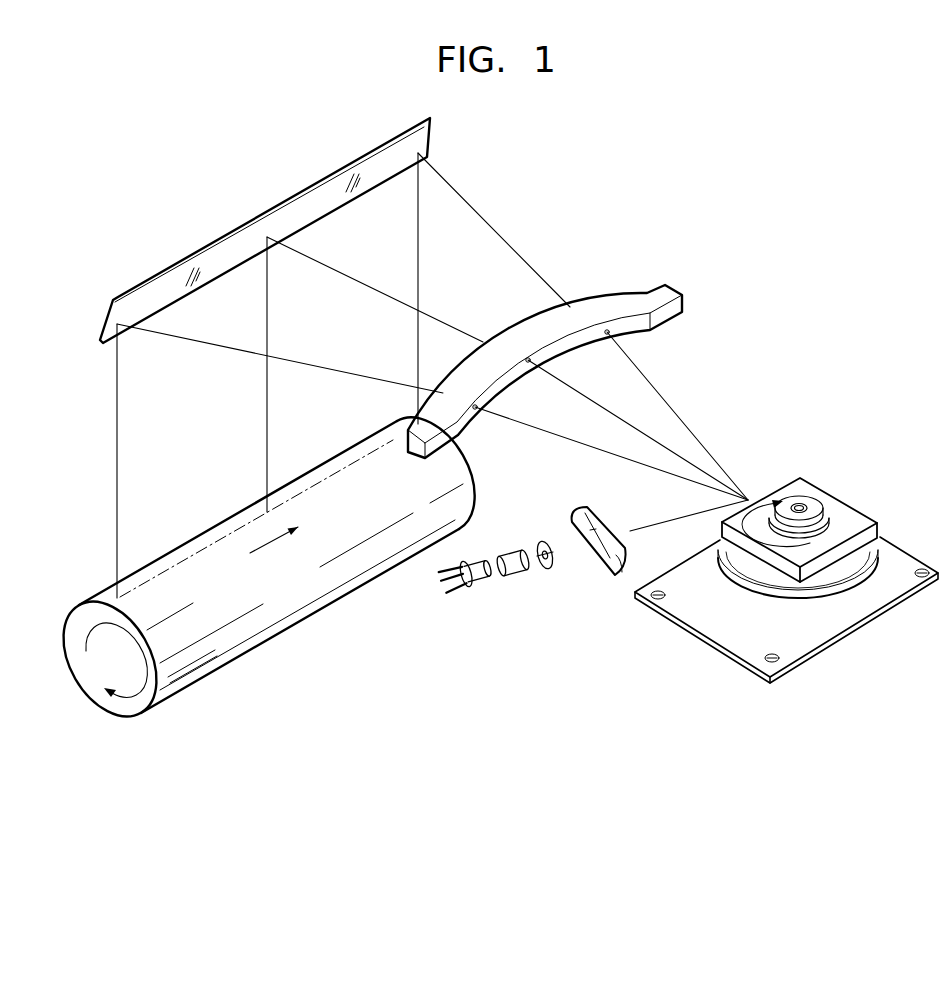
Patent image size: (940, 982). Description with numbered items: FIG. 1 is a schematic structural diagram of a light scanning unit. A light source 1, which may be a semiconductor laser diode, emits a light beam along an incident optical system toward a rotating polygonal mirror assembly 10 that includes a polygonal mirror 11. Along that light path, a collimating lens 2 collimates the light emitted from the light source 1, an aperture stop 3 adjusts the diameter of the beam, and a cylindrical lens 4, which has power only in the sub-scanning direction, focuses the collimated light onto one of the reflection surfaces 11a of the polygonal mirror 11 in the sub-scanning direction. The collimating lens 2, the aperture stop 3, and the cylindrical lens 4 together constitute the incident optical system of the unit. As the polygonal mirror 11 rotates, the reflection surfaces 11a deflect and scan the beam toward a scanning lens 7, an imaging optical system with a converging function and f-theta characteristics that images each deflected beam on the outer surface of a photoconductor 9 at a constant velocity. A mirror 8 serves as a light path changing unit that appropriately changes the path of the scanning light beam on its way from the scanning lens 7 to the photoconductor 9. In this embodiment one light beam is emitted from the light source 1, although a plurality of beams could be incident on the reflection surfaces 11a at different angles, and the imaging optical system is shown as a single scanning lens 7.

The light source 1 is at (472, 590).
The collimating lens 2 is at (510, 572).
The aperture stop 3 is at (545, 571).
The cylindrical lens 4 is at (613, 569).
The scanning lens 7 is at (672, 289).
The mirror 8 is at (272, 207).
The photoconductor 9 is at (223, 519).
The polygonal mirror assembly 10 is at (857, 463).
The polygonal mirror 11 is at (893, 523).
The reflection surface 11a is at (745, 545).